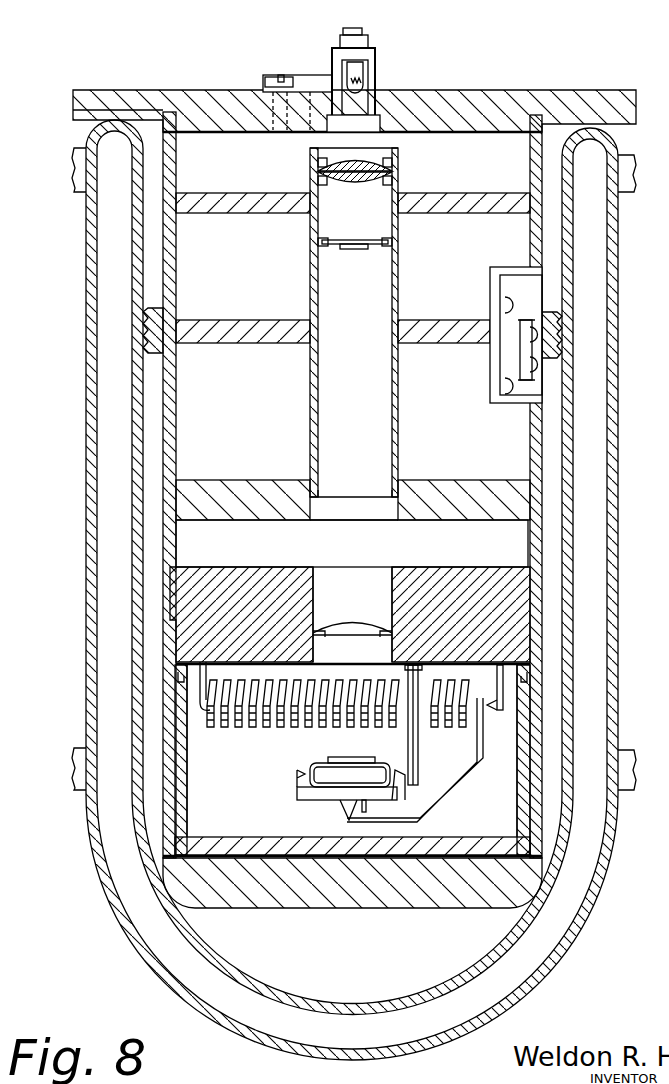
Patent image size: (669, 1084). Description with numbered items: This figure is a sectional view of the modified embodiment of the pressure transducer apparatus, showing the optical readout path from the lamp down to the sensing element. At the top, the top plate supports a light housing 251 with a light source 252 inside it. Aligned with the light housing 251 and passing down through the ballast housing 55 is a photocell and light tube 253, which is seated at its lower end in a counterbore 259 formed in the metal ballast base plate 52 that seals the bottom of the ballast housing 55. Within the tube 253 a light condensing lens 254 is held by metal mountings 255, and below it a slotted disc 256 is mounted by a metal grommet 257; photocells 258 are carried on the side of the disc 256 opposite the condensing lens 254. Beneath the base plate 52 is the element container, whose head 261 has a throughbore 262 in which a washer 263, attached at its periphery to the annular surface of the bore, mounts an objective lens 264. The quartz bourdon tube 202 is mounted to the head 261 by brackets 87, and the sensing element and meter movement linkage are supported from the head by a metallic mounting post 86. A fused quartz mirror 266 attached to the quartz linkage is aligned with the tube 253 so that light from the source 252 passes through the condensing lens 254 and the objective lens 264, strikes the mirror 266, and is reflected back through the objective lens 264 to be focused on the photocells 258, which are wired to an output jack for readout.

The light housing 251 is at (365, 30).
The light source 252 is at (362, 78).
The photocell and light tube 253 is at (398, 270).
The light condensing lens 254 is at (388, 160).
The metal mountings 255 is at (388, 178).
The slotted disc 256 is at (325, 240).
The metal grommet 257 is at (392, 241).
The photocells 258 is at (345, 249).
The counterbore 259 is at (399, 480).
The ballast base plate 52 is at (457, 493).
The ballast housing 55 is at (531, 238).
The head 261 is at (428, 586).
The throughbore 262 is at (359, 580).
The washer 263 is at (388, 634).
The objective lens 264 is at (330, 628).
The brackets 87 is at (200, 702).
The quartz bourdon tube 202 is at (238, 728).
The mirror 266 is at (366, 762).
The metallic mounting post 86 is at (420, 754).